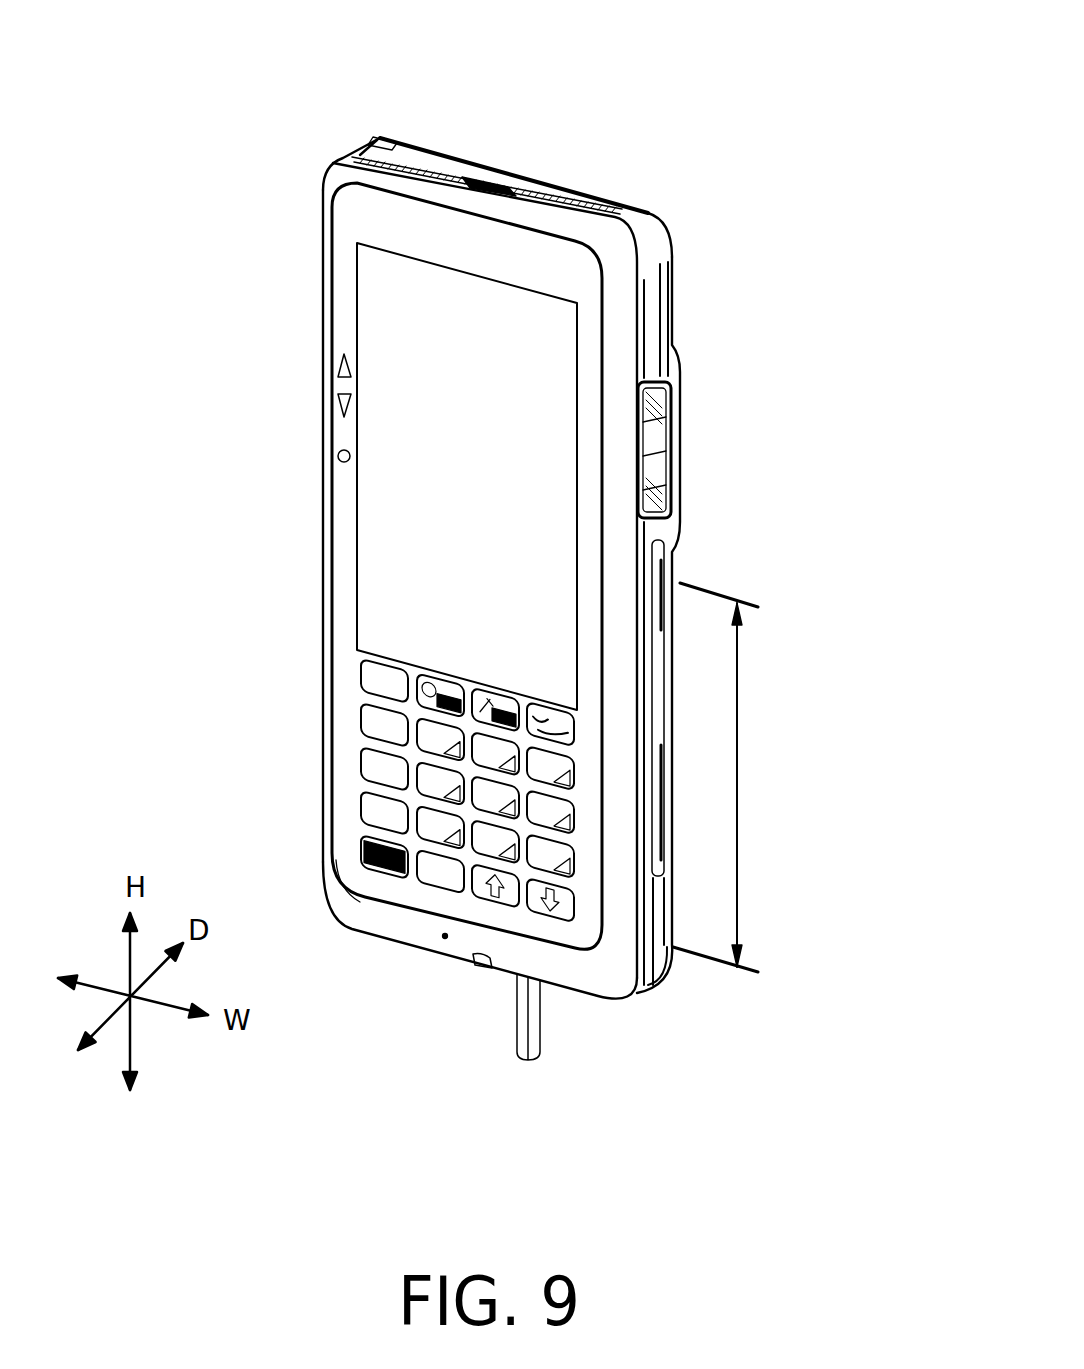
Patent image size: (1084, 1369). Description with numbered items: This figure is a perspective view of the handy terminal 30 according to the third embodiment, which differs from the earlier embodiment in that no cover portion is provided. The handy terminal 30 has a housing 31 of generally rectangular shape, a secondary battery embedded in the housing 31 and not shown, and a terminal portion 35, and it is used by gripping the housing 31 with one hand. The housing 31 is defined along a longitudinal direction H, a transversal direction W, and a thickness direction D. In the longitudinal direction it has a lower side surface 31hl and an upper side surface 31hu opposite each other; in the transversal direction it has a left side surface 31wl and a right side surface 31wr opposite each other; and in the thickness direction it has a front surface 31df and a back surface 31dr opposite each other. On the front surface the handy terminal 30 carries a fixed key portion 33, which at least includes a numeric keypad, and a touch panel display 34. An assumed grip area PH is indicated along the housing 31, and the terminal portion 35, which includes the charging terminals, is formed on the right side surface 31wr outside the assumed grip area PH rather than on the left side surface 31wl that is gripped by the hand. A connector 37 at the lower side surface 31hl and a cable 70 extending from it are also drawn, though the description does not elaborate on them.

The handy terminal 30 is at (518, 578).
The housing 31 is at (333, 173).
The back surface 31dr is at (484, 165).
The upper side surface 31hu is at (543, 197).
The left side surface 31wl is at (320, 380).
The right side surface 31wr is at (652, 333).
The front surface 31df is at (340, 568).
The lower side surface 31hl is at (443, 958).
The fixed key portion 33 is at (370, 763).
The touch panel display 34 is at (440, 475).
The terminal portion 35 is at (672, 453).
The connector 37 is at (484, 966).
The cable 70 is at (537, 1020).
The assumed grip area PH is at (737, 777).